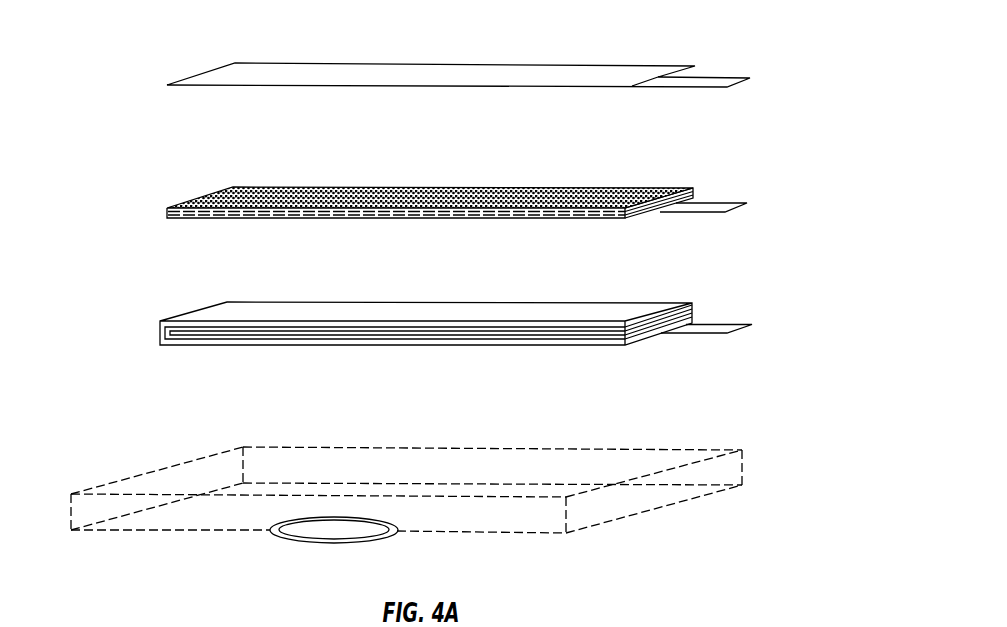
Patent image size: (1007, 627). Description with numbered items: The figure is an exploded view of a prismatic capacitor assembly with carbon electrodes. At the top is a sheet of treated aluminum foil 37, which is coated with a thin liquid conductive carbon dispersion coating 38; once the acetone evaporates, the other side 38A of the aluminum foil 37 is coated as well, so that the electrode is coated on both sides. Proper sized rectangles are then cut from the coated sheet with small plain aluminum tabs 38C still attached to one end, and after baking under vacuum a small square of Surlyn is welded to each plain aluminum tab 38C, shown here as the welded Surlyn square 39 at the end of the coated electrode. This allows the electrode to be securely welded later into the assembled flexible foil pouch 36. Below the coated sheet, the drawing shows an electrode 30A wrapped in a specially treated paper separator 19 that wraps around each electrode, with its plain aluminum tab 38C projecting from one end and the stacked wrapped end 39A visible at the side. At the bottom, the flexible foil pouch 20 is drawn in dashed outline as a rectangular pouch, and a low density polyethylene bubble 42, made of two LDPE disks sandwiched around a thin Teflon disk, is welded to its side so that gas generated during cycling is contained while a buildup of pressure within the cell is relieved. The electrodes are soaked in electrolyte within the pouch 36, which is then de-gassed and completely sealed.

The flexible foil pouch 36 is at (158, 132).
The treated aluminum foil sheet 37 is at (620, 65).
The conductive carbon dispersion coating 38 is at (538, 188).
The other side of aluminum foil 38A is at (495, 218).
The plain aluminum tabs 38C is at (743, 205).
The welded surlyn square 39 is at (802, 202).
The electrode 30A is at (675, 303).
The stack end 39A is at (668, 327).
The paper separator 19 is at (157, 333).
The flexible pouch 20 is at (713, 447).
The LDPE bubble 42 is at (388, 562).